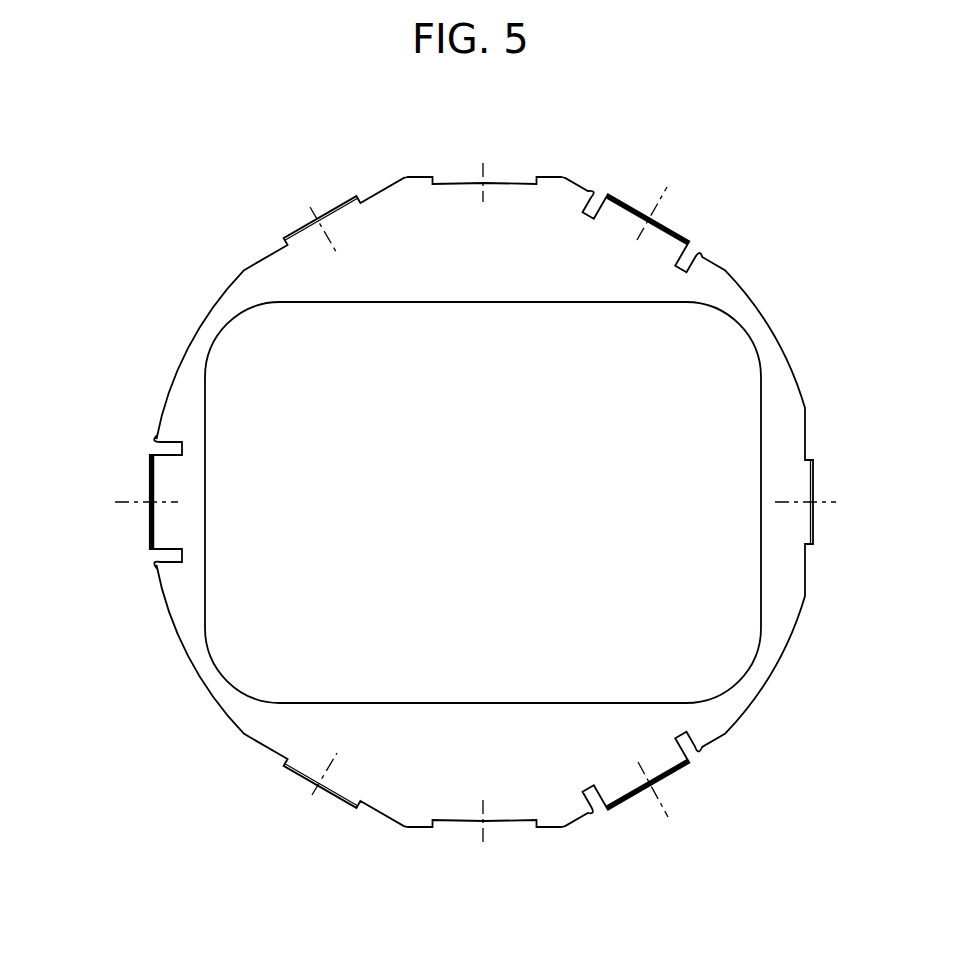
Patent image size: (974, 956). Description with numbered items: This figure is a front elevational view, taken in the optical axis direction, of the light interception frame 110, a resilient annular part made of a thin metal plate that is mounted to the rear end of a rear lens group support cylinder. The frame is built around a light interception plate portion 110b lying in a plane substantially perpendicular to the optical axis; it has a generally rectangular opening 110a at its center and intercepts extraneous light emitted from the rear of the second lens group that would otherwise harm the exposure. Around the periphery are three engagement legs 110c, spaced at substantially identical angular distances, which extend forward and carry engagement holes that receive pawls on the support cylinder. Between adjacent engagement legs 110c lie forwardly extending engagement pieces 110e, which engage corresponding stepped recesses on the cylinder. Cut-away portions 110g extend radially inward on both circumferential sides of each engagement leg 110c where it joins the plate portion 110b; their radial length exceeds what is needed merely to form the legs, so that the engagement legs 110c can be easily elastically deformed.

The light interception frame 110 is at (737, 66).
The generally rectangular opening 110a is at (643, 305).
The light interception plate portion 110b is at (783, 407).
The engagement legs 110c is at (668, 236).
The engagement pieces 110e is at (340, 198).
The cut-away portions 110g is at (598, 188).